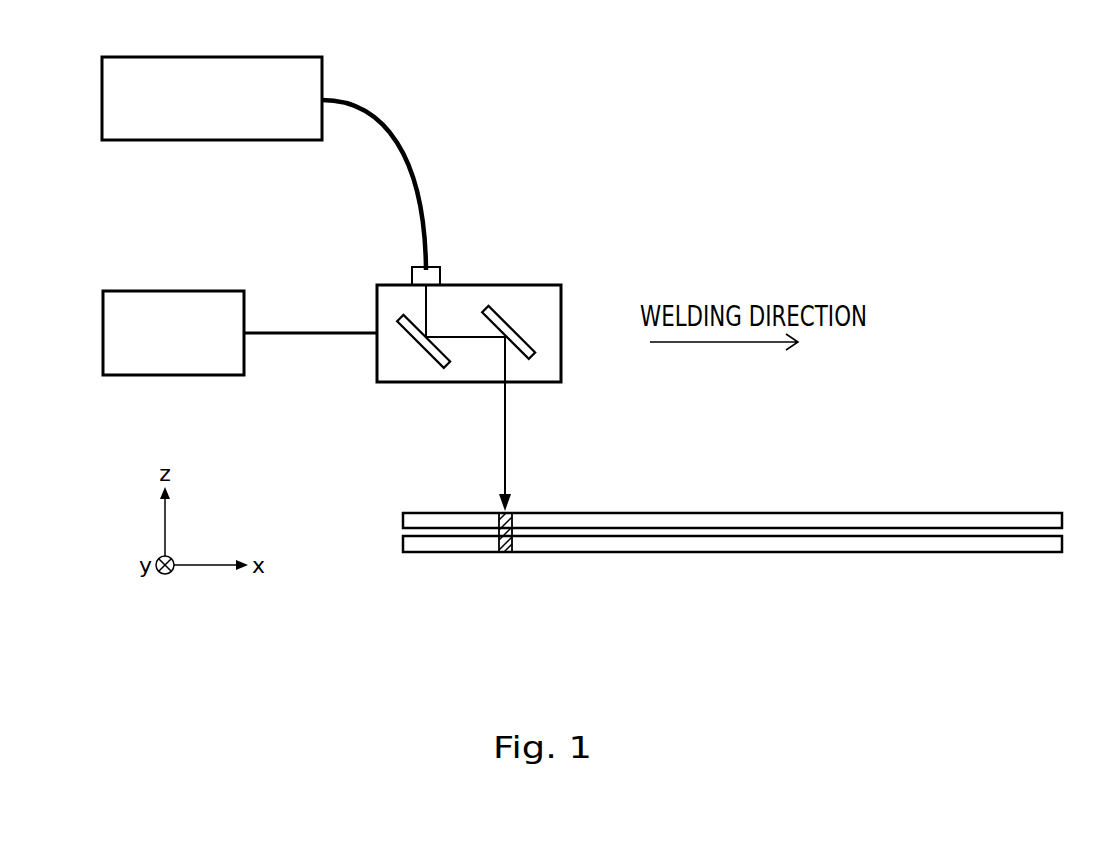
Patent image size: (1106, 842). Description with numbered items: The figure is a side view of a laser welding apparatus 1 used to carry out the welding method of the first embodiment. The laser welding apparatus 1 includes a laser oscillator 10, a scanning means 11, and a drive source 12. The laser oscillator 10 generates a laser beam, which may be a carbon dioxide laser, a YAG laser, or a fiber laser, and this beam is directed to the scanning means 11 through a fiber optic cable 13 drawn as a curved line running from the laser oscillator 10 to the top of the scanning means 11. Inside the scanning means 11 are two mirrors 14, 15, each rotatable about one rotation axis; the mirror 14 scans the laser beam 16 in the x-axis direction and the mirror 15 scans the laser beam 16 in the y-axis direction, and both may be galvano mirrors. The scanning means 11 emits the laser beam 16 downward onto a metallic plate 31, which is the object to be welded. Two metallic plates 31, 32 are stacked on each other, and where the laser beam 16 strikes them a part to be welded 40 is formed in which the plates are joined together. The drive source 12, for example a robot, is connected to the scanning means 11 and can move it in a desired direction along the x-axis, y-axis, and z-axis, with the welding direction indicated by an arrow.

The laser welding apparatus 1 is at (783, 84).
The laser oscillator 10 is at (318, 77).
The scanning means 11 is at (542, 294).
The drive source 12 is at (168, 295).
The fiber optic cable 13 is at (414, 166).
The mirror 14 is at (416, 345).
The mirror 15 is at (531, 350).
The laser beam 16 is at (507, 452).
The metallic plate 31 is at (1000, 520).
The metallic plate 32 is at (1000, 545).
The part to be welded 40 is at (503, 553).